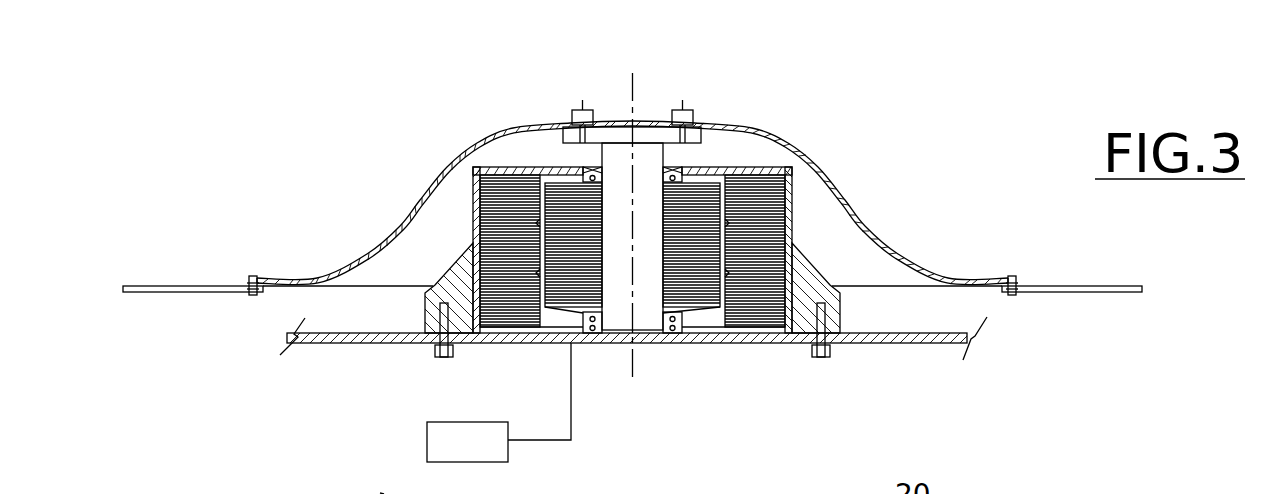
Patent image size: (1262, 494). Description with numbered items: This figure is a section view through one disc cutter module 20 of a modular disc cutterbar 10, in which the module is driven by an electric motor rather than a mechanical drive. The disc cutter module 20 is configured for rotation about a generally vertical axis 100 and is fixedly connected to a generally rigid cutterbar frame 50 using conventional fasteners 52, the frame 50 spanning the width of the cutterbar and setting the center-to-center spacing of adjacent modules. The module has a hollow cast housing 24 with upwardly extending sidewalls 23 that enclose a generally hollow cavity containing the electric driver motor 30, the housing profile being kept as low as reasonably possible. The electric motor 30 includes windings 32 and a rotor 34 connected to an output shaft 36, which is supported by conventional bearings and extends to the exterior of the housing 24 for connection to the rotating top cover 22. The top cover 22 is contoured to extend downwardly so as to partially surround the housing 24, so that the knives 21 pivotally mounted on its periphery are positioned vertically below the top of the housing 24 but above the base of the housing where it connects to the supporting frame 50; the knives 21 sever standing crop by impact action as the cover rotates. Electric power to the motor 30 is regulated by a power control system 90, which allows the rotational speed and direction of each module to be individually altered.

The disc cutterbar 10 is at (382, 493).
The disc cutter module 20 is at (779, 105).
The knife 21 is at (223, 287).
The rotating top cover 22 is at (823, 163).
The sidewall 23 is at (473, 213).
The housing 24 is at (840, 313).
The electric driver motor 30 is at (682, 358).
The windings 32 is at (773, 247).
The rotor 34 is at (558, 302).
The output shaft 36 is at (645, 143).
The cutterbar frame 50 is at (902, 343).
The fastener 52 is at (442, 357).
The power control system 90 is at (493, 462).
The vertical axis 100 is at (633, 86).